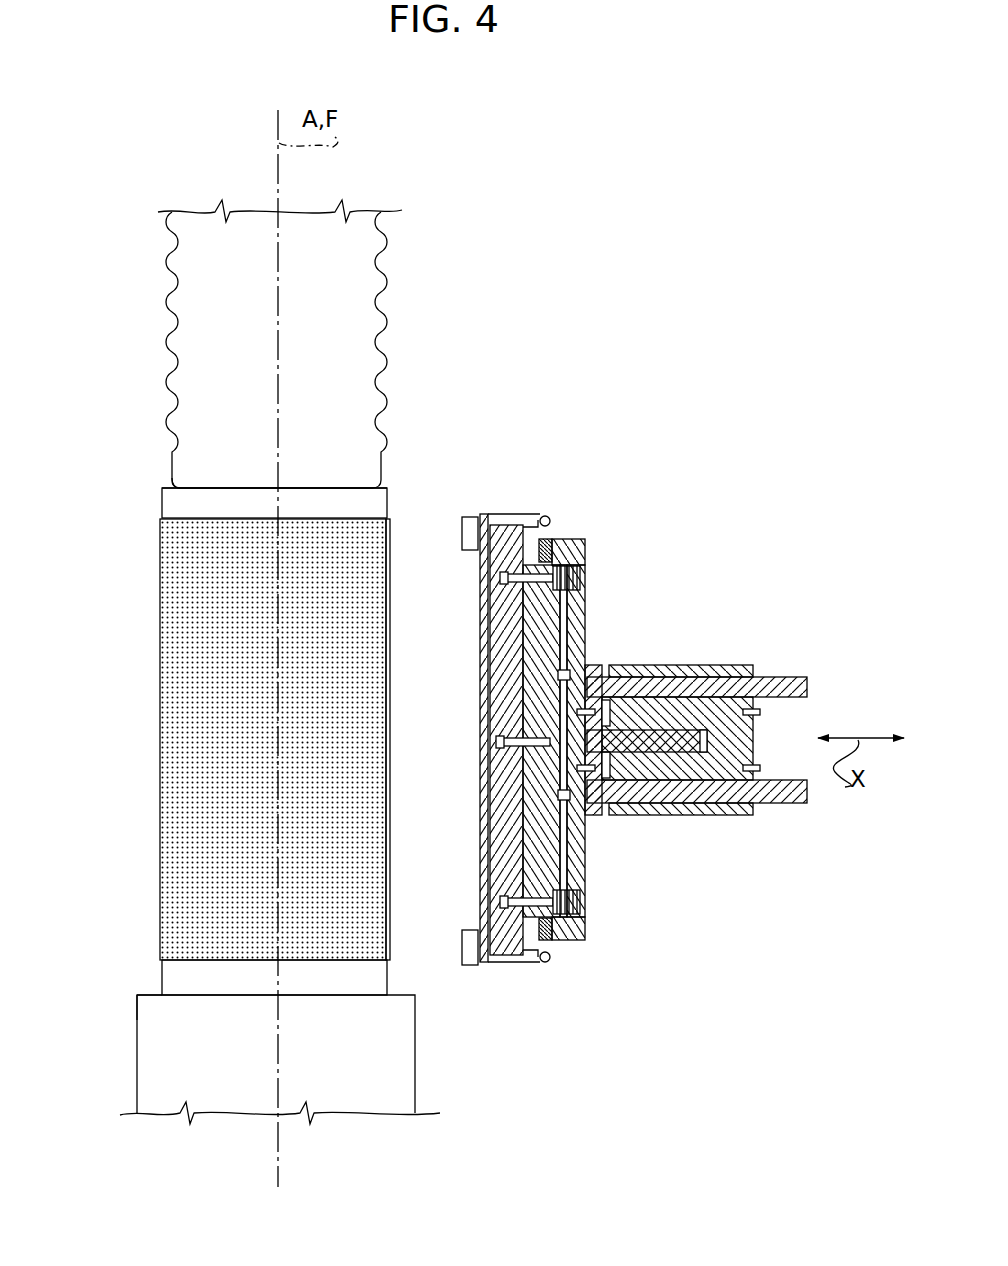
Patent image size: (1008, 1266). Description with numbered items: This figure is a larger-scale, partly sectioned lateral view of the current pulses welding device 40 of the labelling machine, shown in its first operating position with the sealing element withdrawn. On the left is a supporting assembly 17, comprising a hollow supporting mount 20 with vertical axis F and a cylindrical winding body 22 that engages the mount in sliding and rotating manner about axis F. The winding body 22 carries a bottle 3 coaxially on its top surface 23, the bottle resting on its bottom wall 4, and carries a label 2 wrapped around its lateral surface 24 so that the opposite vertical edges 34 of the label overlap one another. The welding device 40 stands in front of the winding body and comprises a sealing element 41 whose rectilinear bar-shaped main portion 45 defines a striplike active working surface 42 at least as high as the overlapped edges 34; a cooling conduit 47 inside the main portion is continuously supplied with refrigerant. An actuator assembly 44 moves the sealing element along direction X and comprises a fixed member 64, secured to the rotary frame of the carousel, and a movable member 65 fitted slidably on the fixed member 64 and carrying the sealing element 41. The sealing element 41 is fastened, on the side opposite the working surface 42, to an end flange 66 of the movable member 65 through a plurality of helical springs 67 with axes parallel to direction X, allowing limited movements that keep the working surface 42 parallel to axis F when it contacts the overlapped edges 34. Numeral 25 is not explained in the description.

The label 2 is at (183, 707).
The bottle 3 is at (341, 268).
The bottom wall 4 is at (190, 492).
The supporting assembly 17 is at (120, 975).
The hollow supporting mount 20 is at (416, 1068).
The cylindrical winding body 22 is at (392, 974).
The top surface 23 is at (170, 482).
The lateral surface 24 is at (390, 505).
The lower junction 25 is at (150, 992).
The overlapped vertical edges 34 is at (396, 643).
The welding device 40 is at (662, 530).
The sealing element 41 is at (500, 605).
The active working surface 42 is at (478, 703).
The actuator assembly 44 is at (763, 662).
The main portion 45 is at (503, 783).
The cooling conduit 47 is at (490, 857).
The fixed member 64 is at (757, 738).
The movable member 65 is at (592, 812).
The end flange 66 is at (578, 612).
The helical springs 67 is at (547, 537).